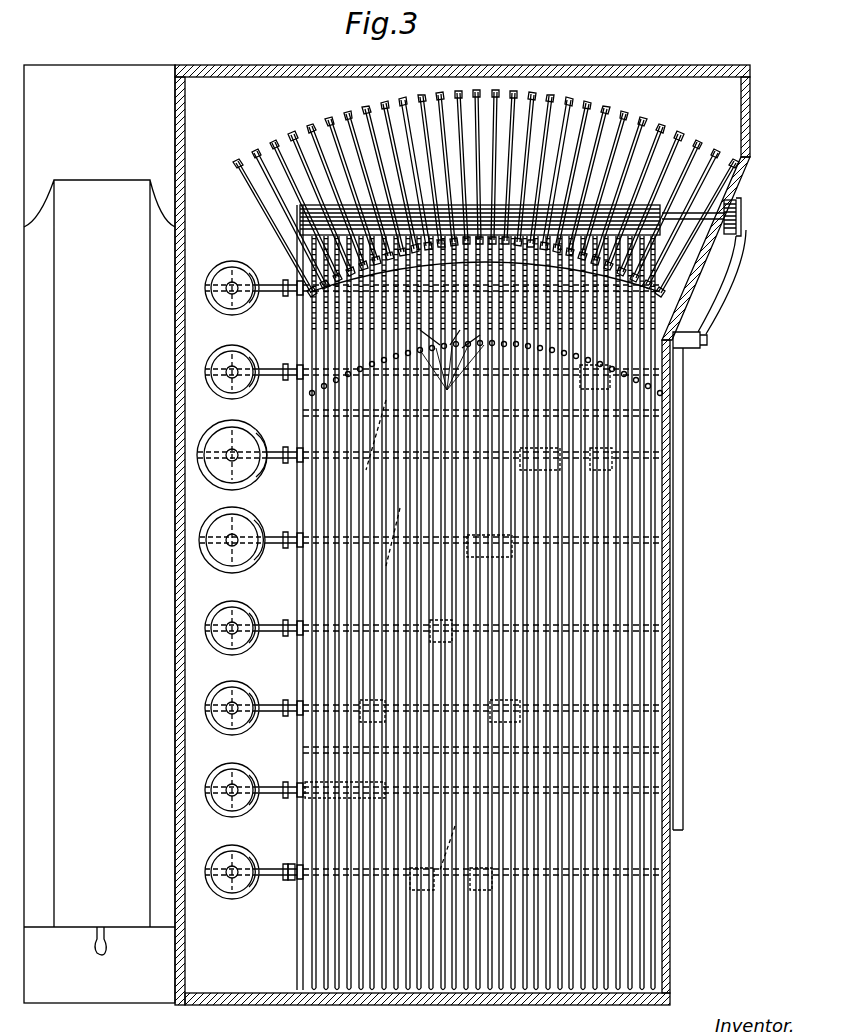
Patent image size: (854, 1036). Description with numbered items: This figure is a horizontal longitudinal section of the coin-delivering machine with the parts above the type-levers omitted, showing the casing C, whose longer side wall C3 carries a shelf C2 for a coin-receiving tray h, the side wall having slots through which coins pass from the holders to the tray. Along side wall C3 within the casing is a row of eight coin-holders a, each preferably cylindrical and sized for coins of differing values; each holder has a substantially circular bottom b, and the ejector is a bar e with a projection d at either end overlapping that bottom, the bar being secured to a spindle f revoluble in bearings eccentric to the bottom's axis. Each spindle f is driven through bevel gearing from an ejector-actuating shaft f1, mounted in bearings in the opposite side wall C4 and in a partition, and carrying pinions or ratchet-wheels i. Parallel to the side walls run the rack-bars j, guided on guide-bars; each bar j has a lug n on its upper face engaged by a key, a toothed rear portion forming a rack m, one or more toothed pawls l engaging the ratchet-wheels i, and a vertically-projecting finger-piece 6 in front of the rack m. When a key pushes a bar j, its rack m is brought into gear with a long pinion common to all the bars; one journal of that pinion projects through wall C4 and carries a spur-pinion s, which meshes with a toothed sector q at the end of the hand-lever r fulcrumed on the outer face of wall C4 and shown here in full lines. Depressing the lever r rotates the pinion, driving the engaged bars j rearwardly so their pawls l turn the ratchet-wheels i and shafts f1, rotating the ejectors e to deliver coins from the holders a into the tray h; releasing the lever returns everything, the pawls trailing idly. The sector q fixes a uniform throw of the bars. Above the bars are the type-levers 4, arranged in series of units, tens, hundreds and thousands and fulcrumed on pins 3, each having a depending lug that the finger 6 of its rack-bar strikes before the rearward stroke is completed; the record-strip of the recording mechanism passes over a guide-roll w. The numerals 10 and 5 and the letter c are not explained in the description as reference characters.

The casing C is at (666, 966).
The shelf C2 is at (105, 1003).
The side wall C3 is at (133, 949).
The side wall C4 is at (664, 875).
The coin-receiving tray h is at (99, 553).
The bearing plate 10 is at (297, 856).
The lug n is at (496, 205).
The rack-bars j is at (278, 940).
The type-levers 4 is at (700, 150).
The arm tips 5 is at (735, 157).
The pins 3 is at (486, 267).
The rack m is at (672, 300).
The finger-piece 6 is at (486, 374).
The shaft f1 is at (412, 626).
The rack pawls l is at (539, 477).
The ratchet-wheel i is at (412, 755).
The coin-holders a is at (215, 815).
The bottom b is at (224, 892).
The knob flange c is at (245, 860).
The projection d is at (248, 890).
The ejector bar e is at (241, 580).
The spindle f is at (278, 725).
The guide-roll w is at (292, 882).
The toothed sector q is at (738, 208).
The spur-pinion s is at (732, 236).
The hand-lever r is at (684, 598).